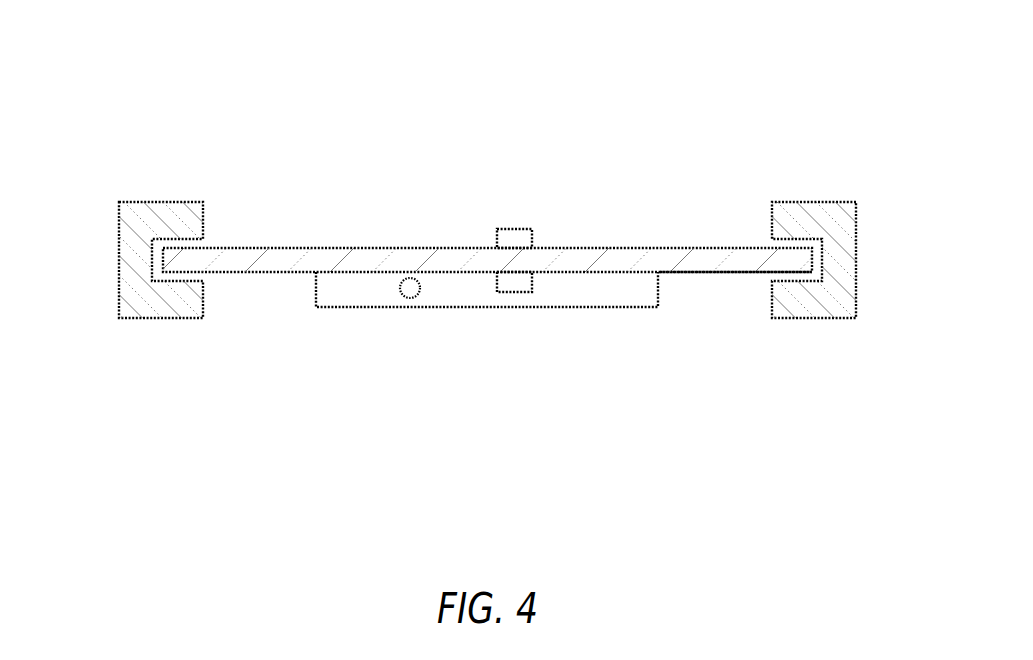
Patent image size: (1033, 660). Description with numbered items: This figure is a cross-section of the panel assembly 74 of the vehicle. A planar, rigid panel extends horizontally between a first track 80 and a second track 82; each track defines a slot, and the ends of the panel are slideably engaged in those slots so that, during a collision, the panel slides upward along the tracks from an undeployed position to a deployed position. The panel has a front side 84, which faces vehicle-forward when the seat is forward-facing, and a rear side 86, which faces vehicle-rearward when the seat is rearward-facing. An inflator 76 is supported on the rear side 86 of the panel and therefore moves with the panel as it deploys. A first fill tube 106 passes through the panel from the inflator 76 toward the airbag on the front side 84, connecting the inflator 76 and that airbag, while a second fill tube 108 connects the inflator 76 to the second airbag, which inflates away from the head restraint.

The panel assembly 74 is at (660, 86).
The inflator 76 is at (634, 308).
The first track 80 is at (118, 236).
The second track 82 is at (857, 232).
The front side 84 is at (696, 247).
The rear side 86 is at (708, 273).
The first fill tube 106 is at (526, 228).
The second fill tube 108 is at (410, 298).